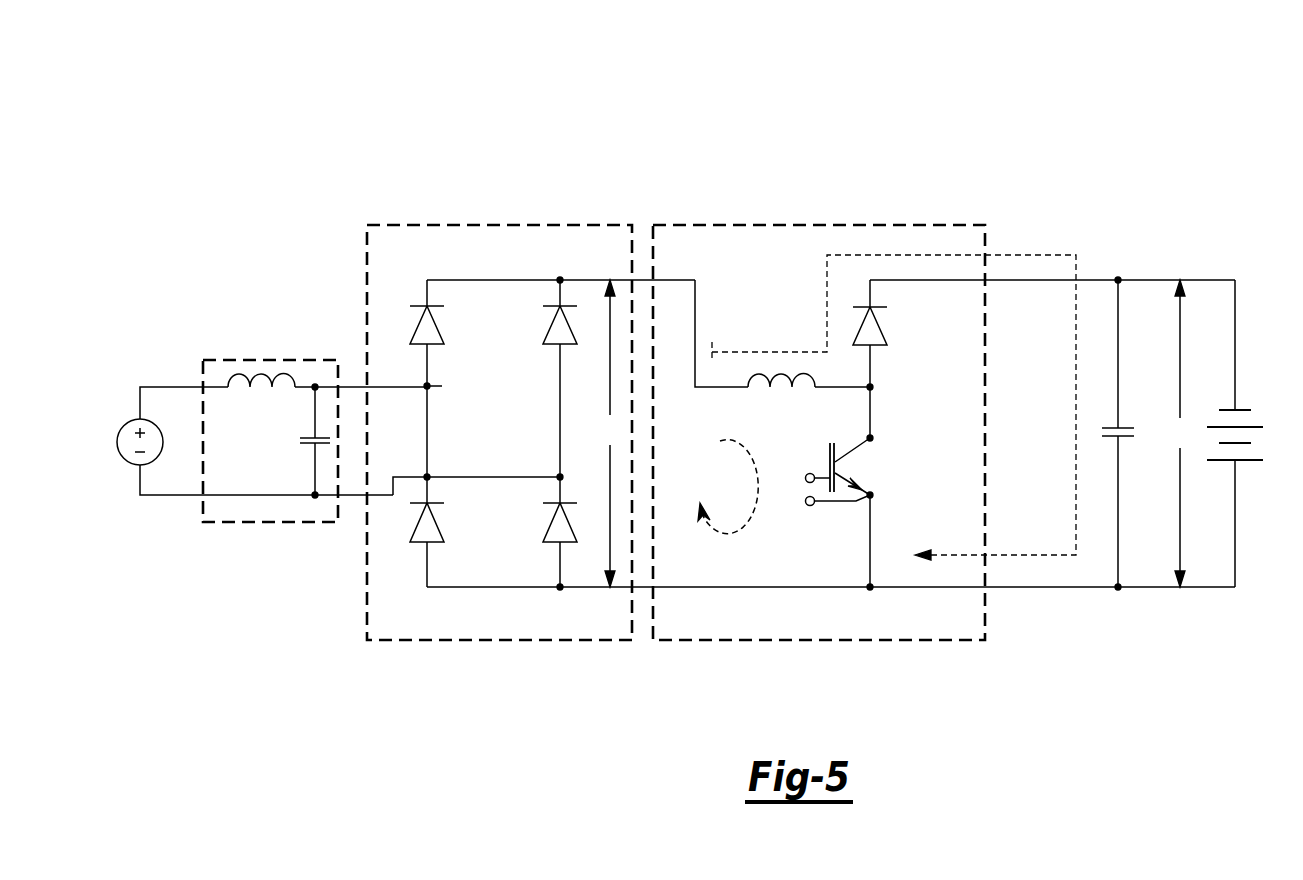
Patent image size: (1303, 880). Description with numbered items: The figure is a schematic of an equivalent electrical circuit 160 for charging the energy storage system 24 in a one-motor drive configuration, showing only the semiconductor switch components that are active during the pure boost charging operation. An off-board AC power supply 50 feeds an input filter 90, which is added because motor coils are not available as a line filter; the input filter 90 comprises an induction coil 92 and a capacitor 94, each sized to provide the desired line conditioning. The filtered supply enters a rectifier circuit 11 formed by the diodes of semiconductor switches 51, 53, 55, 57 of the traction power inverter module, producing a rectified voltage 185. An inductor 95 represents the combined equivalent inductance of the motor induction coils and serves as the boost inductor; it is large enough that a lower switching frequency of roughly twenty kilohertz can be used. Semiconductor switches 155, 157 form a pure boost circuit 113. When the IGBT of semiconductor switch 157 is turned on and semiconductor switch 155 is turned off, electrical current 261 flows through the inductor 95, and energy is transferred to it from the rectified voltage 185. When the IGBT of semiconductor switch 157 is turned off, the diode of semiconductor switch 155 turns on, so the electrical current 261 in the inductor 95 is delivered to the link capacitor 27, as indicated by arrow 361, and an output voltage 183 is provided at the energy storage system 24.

The equivalent electrical circuit 160 is at (810, 120).
The off-board AC power supply 50 is at (117, 442).
The input filter 90 is at (272, 360).
The induction coil 92 is at (262, 378).
The capacitor 94 is at (308, 438).
The rectifier circuit 11 is at (400, 640).
The semiconductor switch 51 is at (455, 344).
The semiconductor switch 53 is at (455, 542).
The semiconductor switch 55 is at (513, 344).
The semiconductor switch 57 is at (513, 542).
The rectified voltage 185 is at (610, 433).
The pure boost circuit 113 is at (775, 640).
The inductor 95 is at (783, 377).
The semiconductor switch 155 is at (903, 336).
The semiconductor switch 157 is at (873, 481).
The electrical current 261 is at (760, 490).
The arrow 361 is at (1030, 255).
The link capacitor 27 is at (1125, 438).
The output voltage 183 is at (1180, 433).
The energy storage system 24 is at (1270, 450).